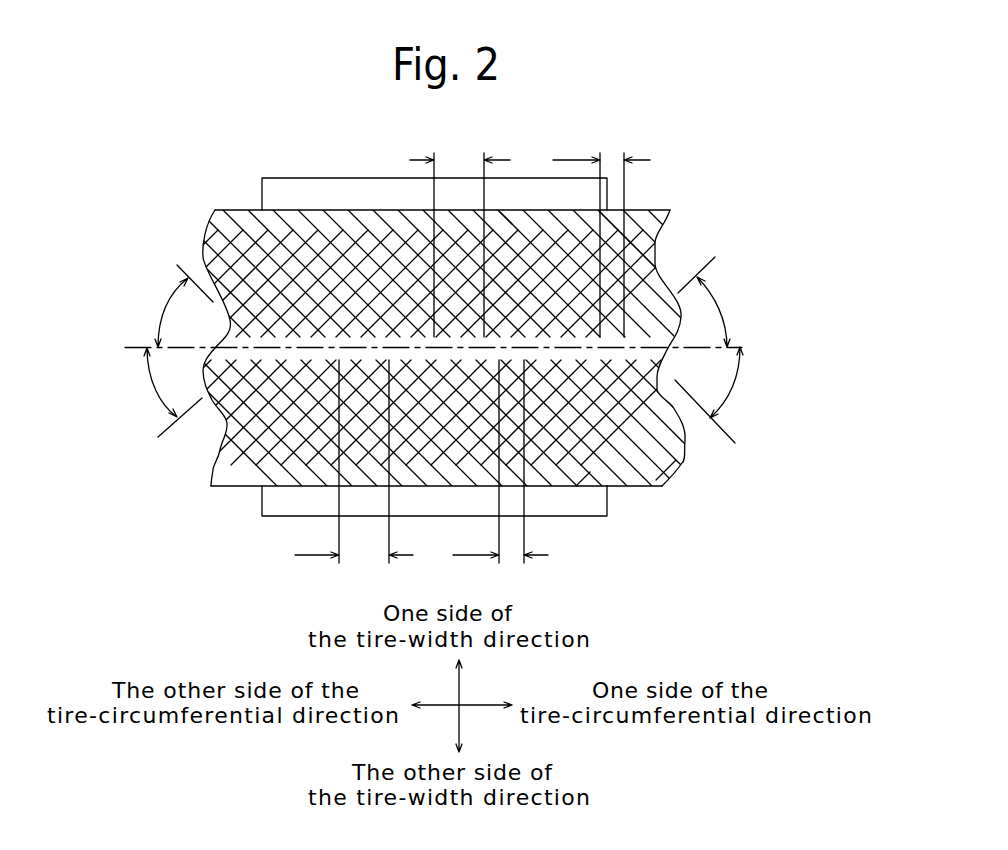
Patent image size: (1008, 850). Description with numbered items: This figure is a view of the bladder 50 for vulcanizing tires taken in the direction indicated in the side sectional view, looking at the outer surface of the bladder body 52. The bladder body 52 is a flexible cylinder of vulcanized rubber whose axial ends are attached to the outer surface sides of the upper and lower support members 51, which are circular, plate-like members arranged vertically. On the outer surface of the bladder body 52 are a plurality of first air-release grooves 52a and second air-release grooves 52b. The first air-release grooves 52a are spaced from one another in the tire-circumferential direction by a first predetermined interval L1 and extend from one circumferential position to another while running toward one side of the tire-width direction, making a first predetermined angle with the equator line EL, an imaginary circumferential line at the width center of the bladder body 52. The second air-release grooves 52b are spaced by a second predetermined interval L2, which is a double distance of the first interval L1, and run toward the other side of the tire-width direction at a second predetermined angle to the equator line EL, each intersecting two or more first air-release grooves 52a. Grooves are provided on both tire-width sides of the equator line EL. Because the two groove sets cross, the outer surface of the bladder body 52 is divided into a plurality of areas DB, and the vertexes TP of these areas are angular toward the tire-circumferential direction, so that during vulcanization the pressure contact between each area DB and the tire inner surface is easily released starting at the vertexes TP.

The bladder for vulcanizing tires 50 is at (450, 346).
The support member 51 is at (320, 178).
The bladder body 52 is at (687, 438).
The first air-release groove 52a is at (527, 212).
The second air-release groove 52b is at (635, 243).
The first predetermined interval L1 is at (551, 351).
The second predetermined interval L2 is at (402, 351).
The vertex TP is at (247, 247).
The area DB is at (240, 245).
The equator line EL is at (130, 347).